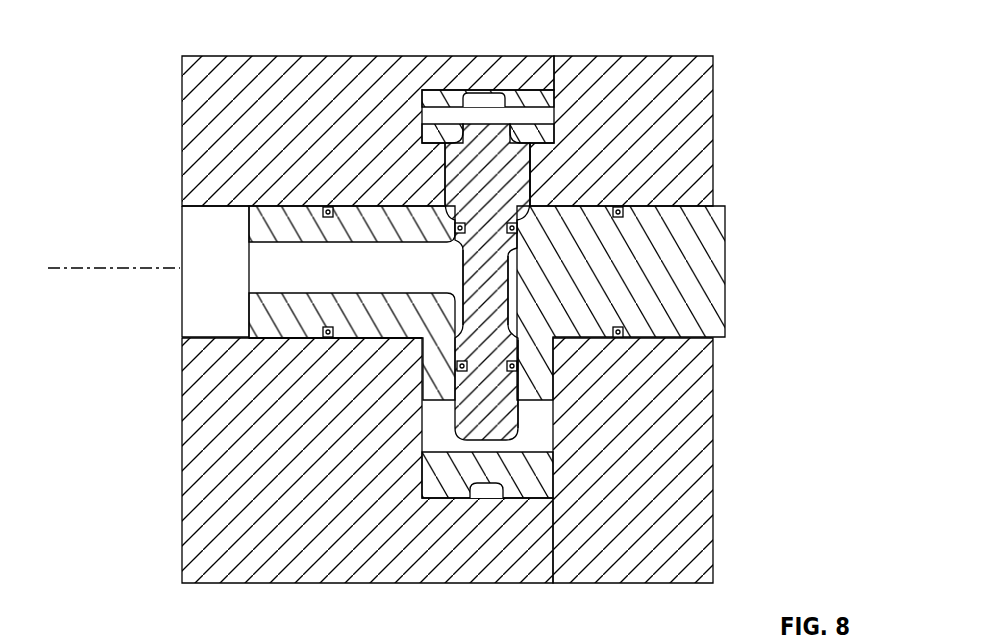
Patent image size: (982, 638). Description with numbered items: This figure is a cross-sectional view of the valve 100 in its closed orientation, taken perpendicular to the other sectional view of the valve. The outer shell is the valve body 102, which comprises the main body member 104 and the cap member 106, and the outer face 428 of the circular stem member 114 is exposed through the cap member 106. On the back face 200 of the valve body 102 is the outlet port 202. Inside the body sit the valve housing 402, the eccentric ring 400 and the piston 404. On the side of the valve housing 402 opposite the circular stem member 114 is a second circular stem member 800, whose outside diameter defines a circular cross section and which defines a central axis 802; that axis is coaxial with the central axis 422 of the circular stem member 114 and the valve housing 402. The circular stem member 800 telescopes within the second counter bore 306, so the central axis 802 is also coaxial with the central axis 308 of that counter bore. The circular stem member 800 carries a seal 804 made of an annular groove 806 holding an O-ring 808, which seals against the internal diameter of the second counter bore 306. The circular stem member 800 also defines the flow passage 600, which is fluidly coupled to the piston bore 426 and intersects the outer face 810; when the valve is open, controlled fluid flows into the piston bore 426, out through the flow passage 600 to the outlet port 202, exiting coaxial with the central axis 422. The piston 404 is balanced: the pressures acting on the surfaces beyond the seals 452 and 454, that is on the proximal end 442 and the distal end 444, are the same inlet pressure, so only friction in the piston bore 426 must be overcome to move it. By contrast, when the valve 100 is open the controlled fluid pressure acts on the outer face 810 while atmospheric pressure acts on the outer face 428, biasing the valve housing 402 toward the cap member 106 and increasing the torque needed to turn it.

The valve 100 is at (456, 320).
The valve body 102 is at (445, 105).
The main body member 104 is at (295, 80).
The cap member 106 is at (692, 167).
The circular stem member 114 is at (660, 303).
The back face 200 is at (331, 104).
The outlet port 202 is at (415, 457).
The second counter bore 306 is at (213, 240).
The central axis 308 is at (123, 270).
The eccentric ring 400 is at (441, 487).
The valve housing 402 is at (608, 268).
The piston 404 is at (592, 286).
The central axis 422 is at (114, 269).
The piston bore 426 is at (455, 282).
The outer face 428 is at (659, 303).
The proximal end 442 is at (532, 182).
The distal end 444 is at (522, 420).
The seal 452 is at (520, 228).
The seal 454 is at (522, 363).
The flow passage 600 is at (321, 283).
The circular stem member 800 is at (286, 289).
The central axis 802 is at (177, 270).
The seal 804 is at (323, 342).
The annular groove 806 is at (322, 208).
The O-ring 808 is at (327, 338).
The outer face 810 is at (247, 332).